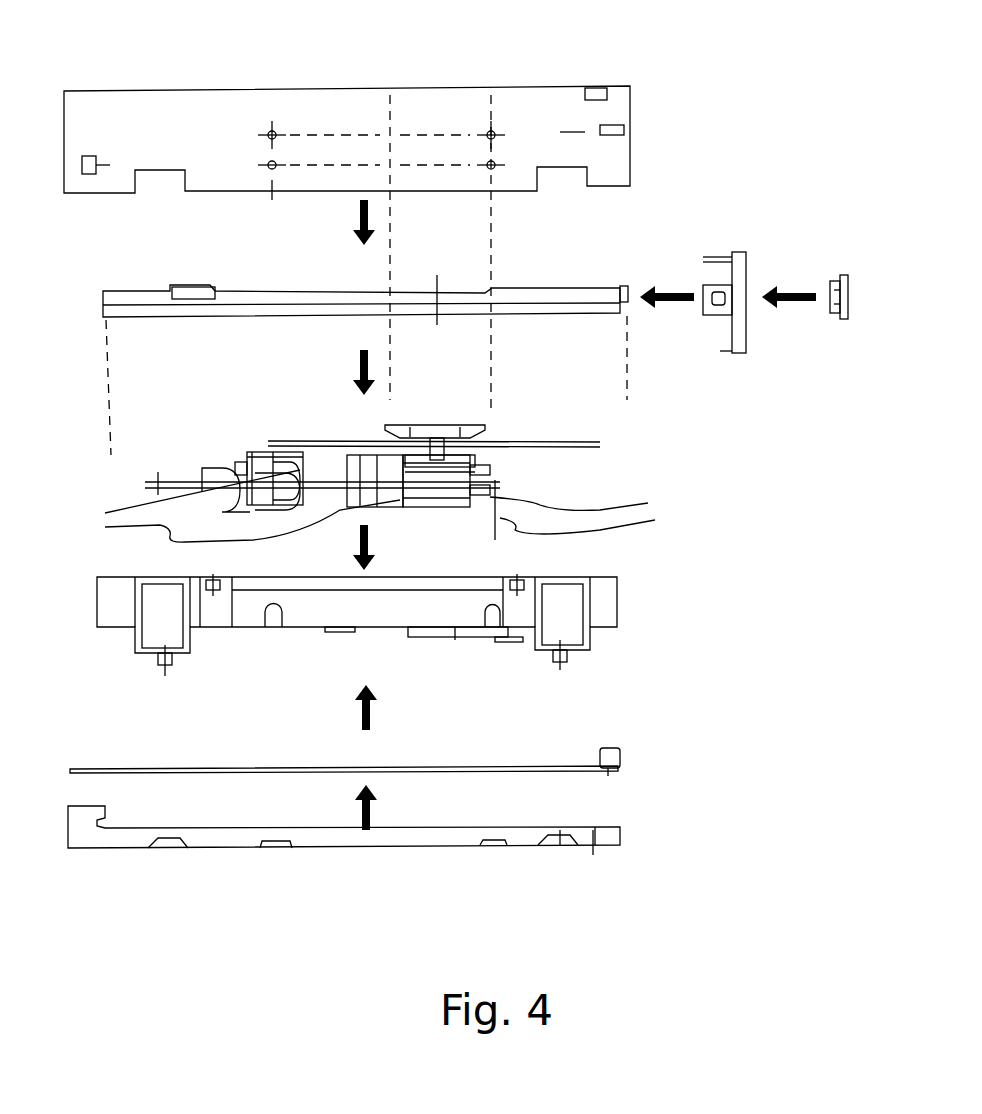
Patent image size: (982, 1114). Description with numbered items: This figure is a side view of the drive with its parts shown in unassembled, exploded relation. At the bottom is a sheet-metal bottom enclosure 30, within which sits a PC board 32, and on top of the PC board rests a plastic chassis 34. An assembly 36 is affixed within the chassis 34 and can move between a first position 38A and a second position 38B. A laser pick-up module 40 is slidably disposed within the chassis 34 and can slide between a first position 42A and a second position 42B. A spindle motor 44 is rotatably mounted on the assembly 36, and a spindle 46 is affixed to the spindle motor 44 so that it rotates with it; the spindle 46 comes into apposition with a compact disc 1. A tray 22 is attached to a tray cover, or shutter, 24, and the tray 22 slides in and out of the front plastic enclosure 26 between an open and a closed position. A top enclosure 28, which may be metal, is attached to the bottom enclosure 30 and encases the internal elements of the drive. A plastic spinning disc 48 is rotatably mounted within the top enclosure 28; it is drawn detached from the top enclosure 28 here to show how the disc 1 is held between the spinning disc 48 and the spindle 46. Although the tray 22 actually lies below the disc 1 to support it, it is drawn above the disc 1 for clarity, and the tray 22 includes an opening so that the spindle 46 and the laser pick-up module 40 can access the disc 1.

The compact disc 1 is at (540, 410).
The tray 22 is at (535, 297).
The tray cover (shutter) 24 is at (845, 320).
The front plastic enclosure 26 is at (742, 355).
The top enclosure 28 is at (347, 113).
The bottom enclosure 30 is at (605, 842).
The PC board 32 is at (548, 765).
The chassis 34 is at (600, 611).
The assembly 36 is at (482, 508).
The first position 38A is at (607, 527).
The second position 38B is at (596, 502).
The laser pick-up module 40 is at (243, 443).
The first position 42A is at (171, 496).
The second position 42B is at (225, 524).
The spindle motor 44 is at (480, 465).
The spindle 46 is at (485, 445).
The spinning disc 48 is at (434, 420).